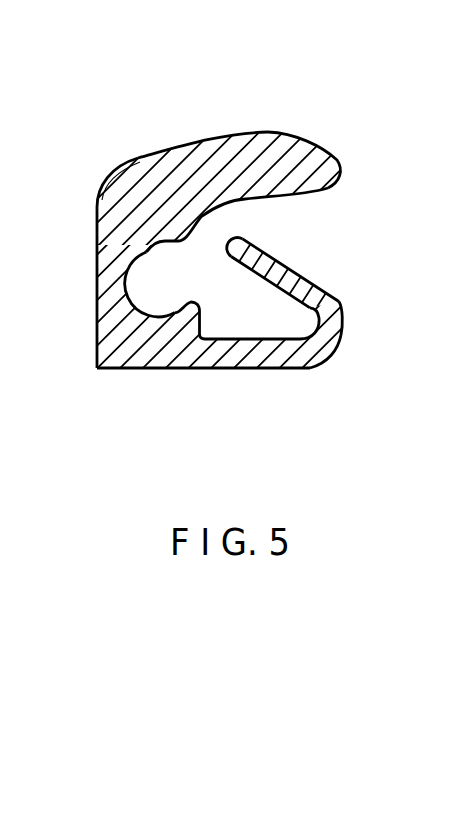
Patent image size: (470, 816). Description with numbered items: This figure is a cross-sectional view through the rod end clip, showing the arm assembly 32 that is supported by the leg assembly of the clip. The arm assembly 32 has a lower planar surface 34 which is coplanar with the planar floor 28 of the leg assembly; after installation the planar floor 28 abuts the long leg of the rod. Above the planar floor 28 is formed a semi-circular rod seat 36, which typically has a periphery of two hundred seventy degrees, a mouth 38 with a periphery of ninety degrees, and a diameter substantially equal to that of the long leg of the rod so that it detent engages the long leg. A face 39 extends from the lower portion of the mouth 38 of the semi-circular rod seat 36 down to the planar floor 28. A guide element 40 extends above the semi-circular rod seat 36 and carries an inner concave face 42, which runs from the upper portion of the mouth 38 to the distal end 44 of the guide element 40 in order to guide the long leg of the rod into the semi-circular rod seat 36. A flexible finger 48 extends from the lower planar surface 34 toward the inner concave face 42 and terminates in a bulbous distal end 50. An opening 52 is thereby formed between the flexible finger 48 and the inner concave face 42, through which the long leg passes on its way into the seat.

The planar floor 28 is at (182, 369).
The arm assembly 32 is at (269, 113).
The lower planar surface 34 is at (278, 370).
The semi-circular rod seat 36 is at (125, 283).
The mouth 38 is at (187, 278).
The face 39 is at (235, 340).
The guide element 40 is at (170, 165).
The inner concave face 42 is at (253, 200).
The distal end 44 is at (342, 165).
The flexible finger 48 is at (317, 275).
The bulbous distal end 50 is at (233, 241).
The opening 52 is at (287, 240).